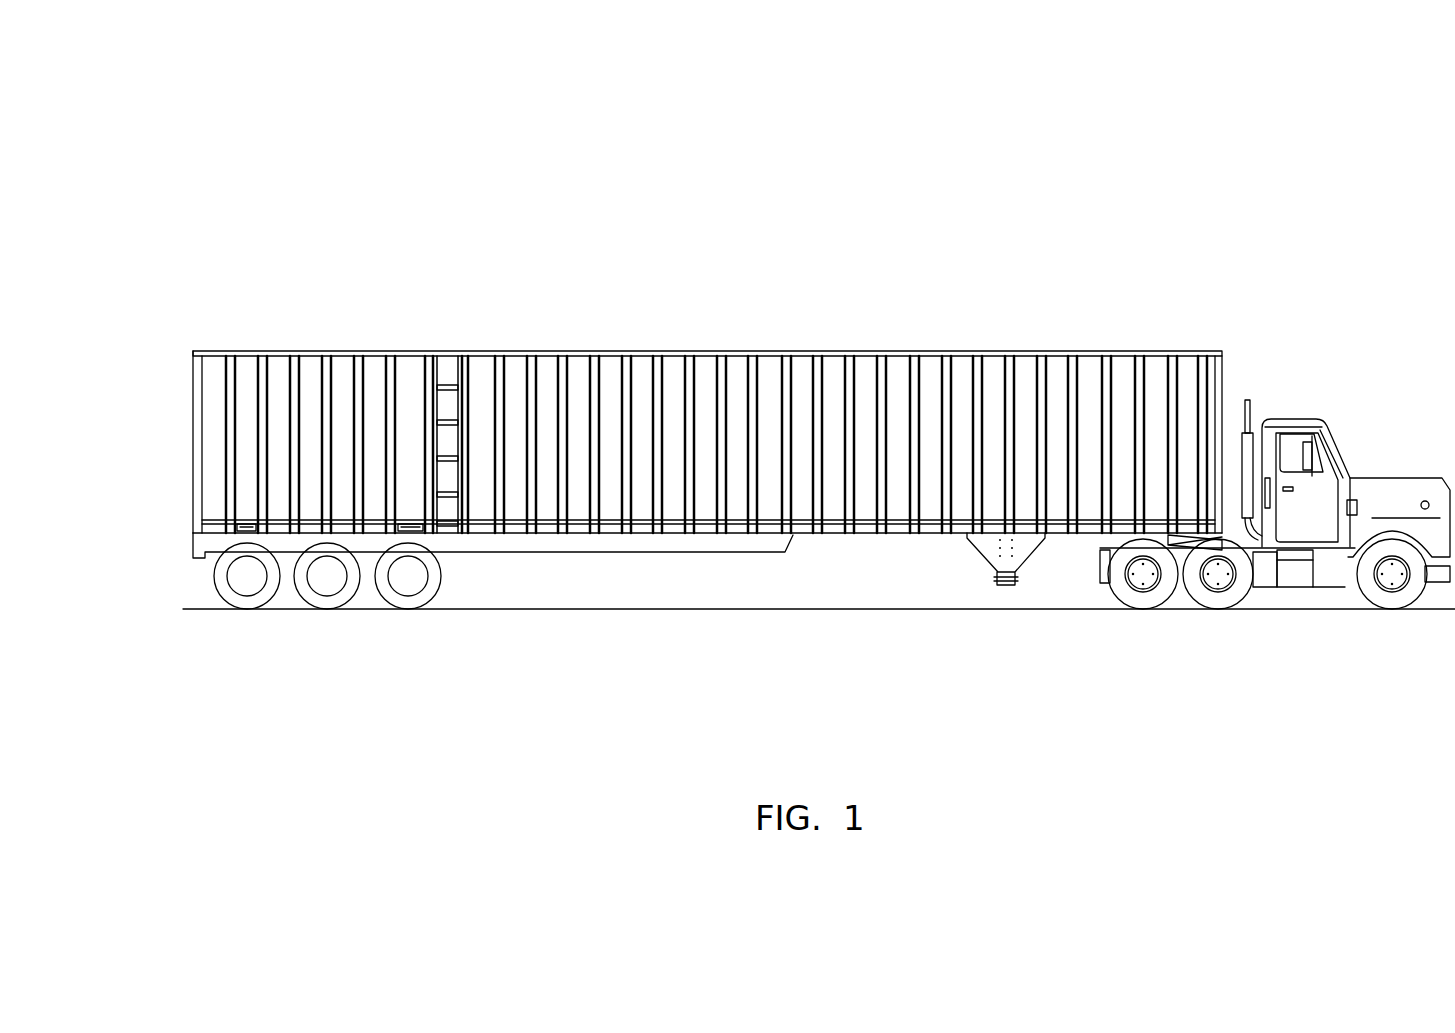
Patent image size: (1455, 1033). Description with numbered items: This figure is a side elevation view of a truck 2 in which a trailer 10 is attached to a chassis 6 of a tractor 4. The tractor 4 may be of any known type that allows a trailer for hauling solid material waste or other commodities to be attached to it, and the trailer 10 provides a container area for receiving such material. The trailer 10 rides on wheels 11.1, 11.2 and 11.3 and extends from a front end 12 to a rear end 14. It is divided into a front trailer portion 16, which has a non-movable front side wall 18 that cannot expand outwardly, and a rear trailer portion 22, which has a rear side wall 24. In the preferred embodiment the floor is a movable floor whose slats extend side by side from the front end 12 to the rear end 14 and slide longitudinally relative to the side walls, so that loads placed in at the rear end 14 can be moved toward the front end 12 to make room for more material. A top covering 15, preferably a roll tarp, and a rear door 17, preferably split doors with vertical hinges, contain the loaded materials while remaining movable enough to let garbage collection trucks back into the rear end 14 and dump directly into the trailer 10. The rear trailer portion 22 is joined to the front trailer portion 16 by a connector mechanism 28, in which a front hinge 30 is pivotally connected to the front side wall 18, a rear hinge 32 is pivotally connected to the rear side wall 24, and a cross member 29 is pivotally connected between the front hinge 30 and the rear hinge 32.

The truck 2 is at (773, 183).
The tractor 4 is at (1297, 417).
The chassis 6 is at (1257, 575).
The trailer 10 is at (542, 212).
The wheel 11.1 is at (230, 610).
The wheel 11.2 is at (308, 607).
The wheel 11.3 is at (390, 605).
The front end 12 is at (1222, 375).
The rear end 14 is at (180, 368).
The top covering 15 is at (250, 350).
The front trailer portion 16 is at (708, 350).
The rear door 17 is at (195, 448).
The front side wall 18 is at (836, 400).
The rear trailer portion 22 is at (317, 350).
The rear side wall 24 is at (375, 400).
The connector mechanism 28 is at (443, 350).
The cross member 29 is at (447, 370).
The front hinge 30 is at (460, 360).
The rear hinge 32 is at (430, 358).